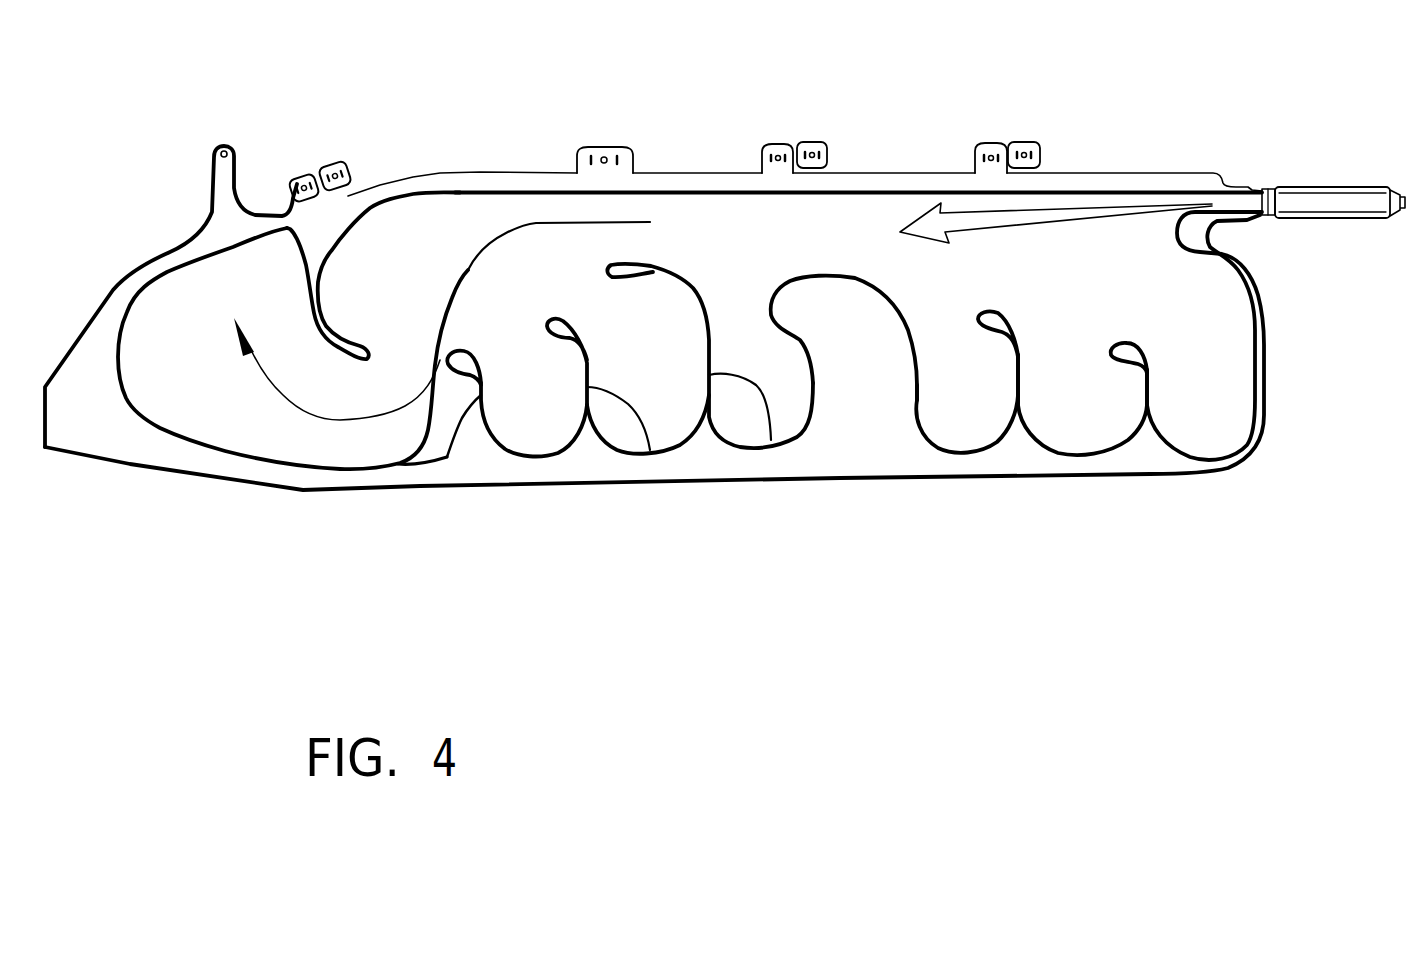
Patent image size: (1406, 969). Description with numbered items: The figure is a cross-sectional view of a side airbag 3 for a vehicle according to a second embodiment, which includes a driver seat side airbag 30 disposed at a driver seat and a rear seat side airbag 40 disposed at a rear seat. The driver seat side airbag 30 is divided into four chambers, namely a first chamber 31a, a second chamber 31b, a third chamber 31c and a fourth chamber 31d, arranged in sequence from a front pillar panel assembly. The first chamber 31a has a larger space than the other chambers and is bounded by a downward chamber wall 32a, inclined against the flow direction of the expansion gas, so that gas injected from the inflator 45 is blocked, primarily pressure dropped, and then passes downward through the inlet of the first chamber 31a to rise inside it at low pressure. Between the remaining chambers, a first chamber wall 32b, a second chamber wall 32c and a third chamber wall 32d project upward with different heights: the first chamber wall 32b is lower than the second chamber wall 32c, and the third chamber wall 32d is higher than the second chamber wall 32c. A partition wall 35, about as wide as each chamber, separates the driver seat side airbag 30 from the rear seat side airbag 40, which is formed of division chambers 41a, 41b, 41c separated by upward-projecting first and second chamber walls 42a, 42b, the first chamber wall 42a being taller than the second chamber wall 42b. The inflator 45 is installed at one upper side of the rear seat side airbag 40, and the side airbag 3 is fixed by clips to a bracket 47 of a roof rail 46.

The side airbag 3 is at (294, 551).
The driver seat side airbag 30 is at (561, 474).
The first chamber 31a is at (198, 295).
The second chamber 31b is at (523, 428).
The third chamber 31c is at (667, 423).
The fourth chamber 31d is at (787, 420).
The downward chamber wall 32a is at (313, 306).
The first chamber wall 32b is at (447, 457).
The second chamber wall 32c is at (650, 450).
The third chamber wall 32d is at (771, 440).
The partition wall 35 is at (853, 377).
The rear seat side airbag 40 is at (1126, 470).
The division chamber 41a is at (967, 430).
The division chamber 41b is at (1090, 442).
The division chamber 41c is at (1183, 430).
The first chamber wall 42a is at (1021, 360).
The second chamber wall 42b is at (1150, 387).
The inflator 45 is at (1310, 195).
The roof rail 46 is at (707, 183).
The bracket 47 is at (298, 178).